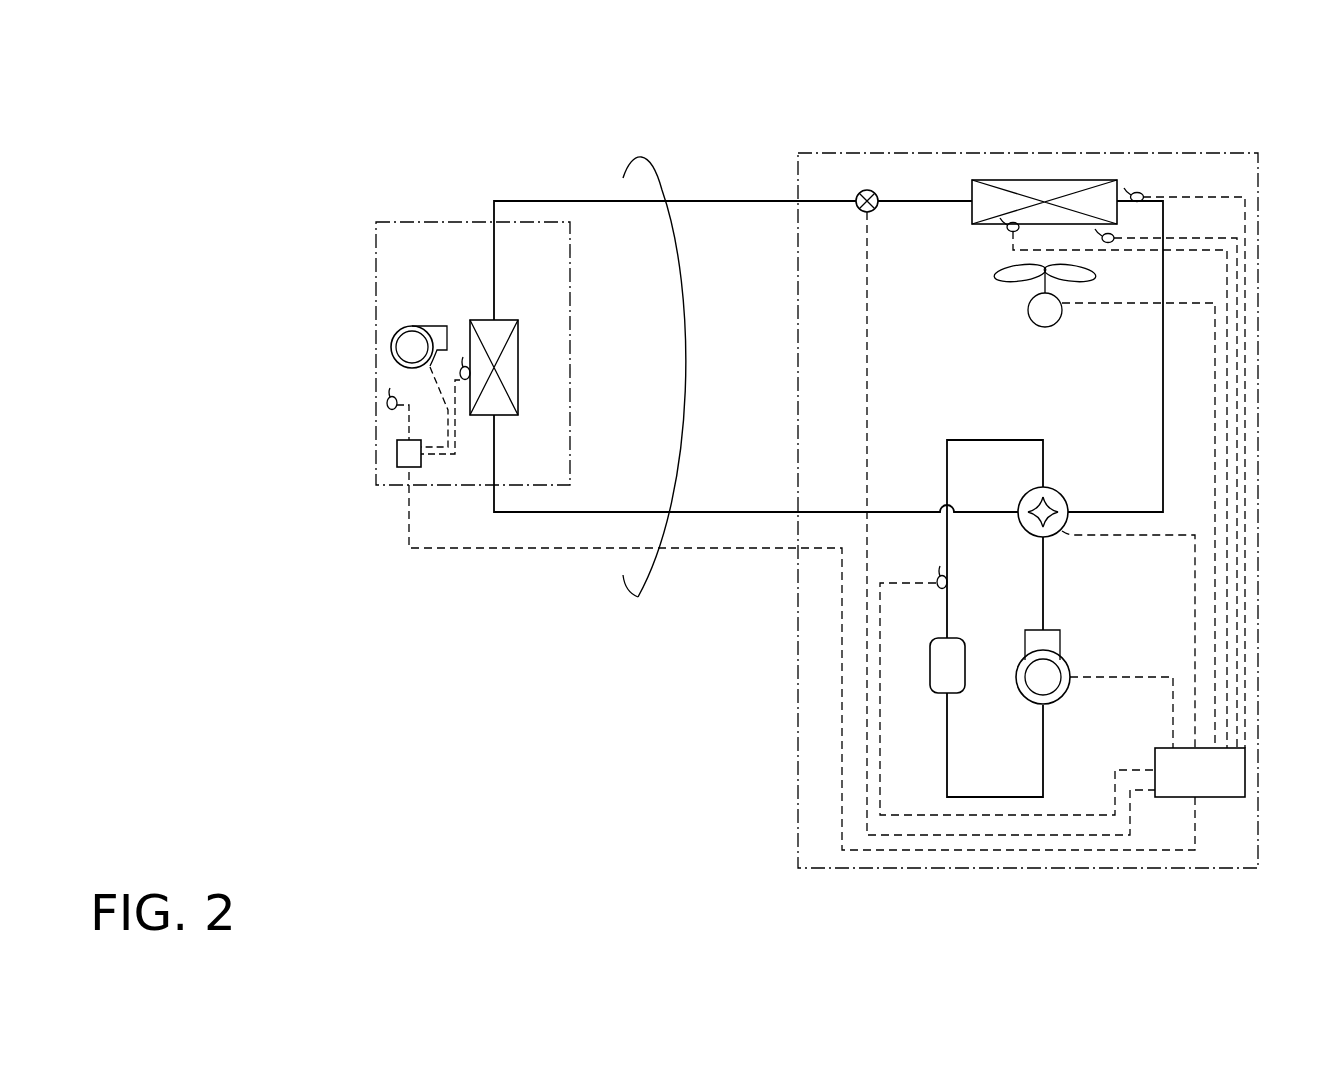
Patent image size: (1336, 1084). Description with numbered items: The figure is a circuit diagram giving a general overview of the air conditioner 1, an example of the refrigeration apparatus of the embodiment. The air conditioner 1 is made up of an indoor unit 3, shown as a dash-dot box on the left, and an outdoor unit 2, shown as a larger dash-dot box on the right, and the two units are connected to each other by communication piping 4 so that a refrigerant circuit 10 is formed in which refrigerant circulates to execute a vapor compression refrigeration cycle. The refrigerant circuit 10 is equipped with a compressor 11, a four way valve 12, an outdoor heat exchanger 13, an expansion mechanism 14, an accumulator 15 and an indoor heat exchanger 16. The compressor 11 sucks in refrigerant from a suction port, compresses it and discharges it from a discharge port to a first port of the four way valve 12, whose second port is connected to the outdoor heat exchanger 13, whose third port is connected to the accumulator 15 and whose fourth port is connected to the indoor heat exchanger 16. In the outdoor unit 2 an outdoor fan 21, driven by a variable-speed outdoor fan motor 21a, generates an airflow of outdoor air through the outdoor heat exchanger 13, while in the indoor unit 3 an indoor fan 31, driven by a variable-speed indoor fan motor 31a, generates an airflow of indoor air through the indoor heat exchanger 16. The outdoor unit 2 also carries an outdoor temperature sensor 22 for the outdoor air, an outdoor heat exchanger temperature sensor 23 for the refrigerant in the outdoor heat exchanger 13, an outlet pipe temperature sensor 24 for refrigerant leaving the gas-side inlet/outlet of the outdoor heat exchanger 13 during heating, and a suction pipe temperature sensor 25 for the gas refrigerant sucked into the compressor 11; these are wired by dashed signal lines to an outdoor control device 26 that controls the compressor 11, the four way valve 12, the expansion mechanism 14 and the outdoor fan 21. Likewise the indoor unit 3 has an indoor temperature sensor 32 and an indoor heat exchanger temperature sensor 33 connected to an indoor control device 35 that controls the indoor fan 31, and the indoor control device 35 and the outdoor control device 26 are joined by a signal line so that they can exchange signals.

The air conditioner 1 is at (732, 137).
The outdoor unit 2 is at (922, 153).
The indoor unit 3 is at (467, 222).
The communication piping 4 is at (638, 597).
The refrigerant circuit 10 is at (730, 199).
The compressor 11 is at (1017, 668).
The four way valve 12 is at (1060, 497).
The outdoor heat exchanger 13 is at (1042, 185).
The expansion mechanism 14 is at (862, 191).
The accumulator 15 is at (930, 678).
The indoor heat exchanger 16 is at (512, 373).
The outdoor fan 21 is at (1018, 282).
The outdoor fan motor 21a is at (1040, 328).
The outdoor temperature sensor 22 is at (1007, 227).
The outdoor heat exchanger temperature sensor 23 is at (1107, 245).
The outlet pipe temperature sensor 24 is at (1140, 193).
The suction pipe temperature sensor 25 is at (940, 573).
The outdoor control device 26 is at (1245, 773).
The indoor fan 31 is at (415, 327).
The indoor fan motor 31a is at (397, 343).
The indoor temperature sensor 32 is at (386, 375).
The indoor heat exchanger temperature sensor 33 is at (453, 363).
The indoor control device 35 is at (405, 458).